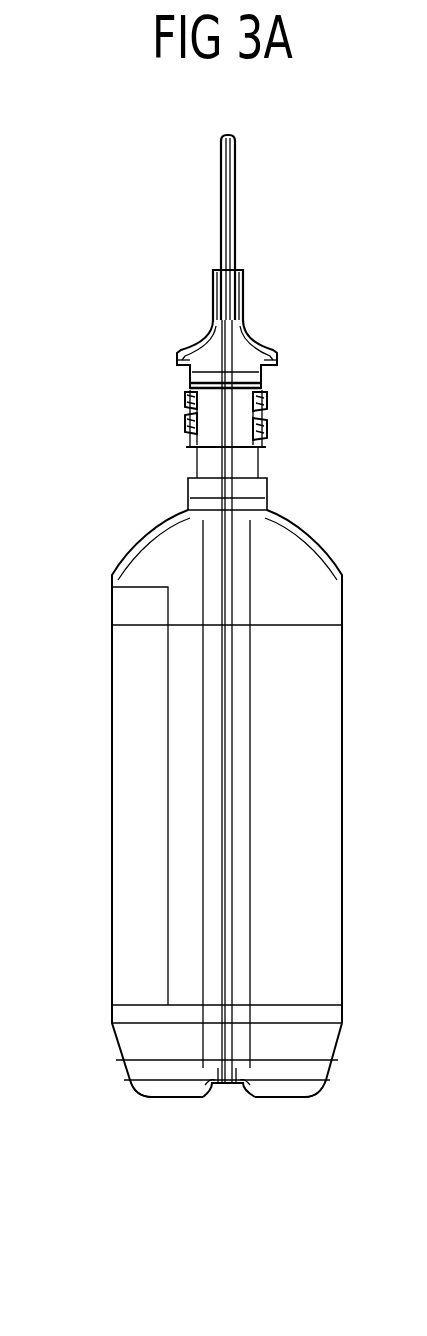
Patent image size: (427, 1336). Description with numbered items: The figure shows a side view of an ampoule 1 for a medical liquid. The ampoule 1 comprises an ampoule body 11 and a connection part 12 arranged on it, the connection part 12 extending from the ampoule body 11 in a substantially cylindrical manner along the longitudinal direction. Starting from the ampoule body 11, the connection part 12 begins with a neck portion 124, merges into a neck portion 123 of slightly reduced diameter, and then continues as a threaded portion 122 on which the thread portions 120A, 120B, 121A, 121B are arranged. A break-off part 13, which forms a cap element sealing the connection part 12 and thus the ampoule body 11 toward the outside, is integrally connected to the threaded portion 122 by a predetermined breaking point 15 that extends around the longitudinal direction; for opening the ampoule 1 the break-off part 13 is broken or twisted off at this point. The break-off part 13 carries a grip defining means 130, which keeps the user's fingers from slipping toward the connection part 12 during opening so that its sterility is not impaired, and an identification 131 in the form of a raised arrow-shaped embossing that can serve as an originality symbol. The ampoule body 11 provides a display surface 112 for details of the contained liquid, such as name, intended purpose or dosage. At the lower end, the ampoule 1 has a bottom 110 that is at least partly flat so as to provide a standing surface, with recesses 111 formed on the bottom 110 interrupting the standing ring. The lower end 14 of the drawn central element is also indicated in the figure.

The ampoule 1 is at (227, 852).
The ampoule body 11 is at (330, 805).
The connection part 12 is at (225, 448).
The break-off part 13 is at (226, 201).
The straw lower end 14 is at (217, 1094).
The predetermined breaking point 15 is at (259, 386).
The bottom 110 is at (280, 1094).
The recesses 111 is at (233, 1094).
The display surface 112 is at (140, 810).
The thread portion 120A is at (268, 400).
The thread portion 120B is at (185, 394).
The thread portion 121A is at (270, 433).
The thread portion 121B is at (185, 423).
The threaded portion 122 is at (203, 437).
The neck portion 123 is at (248, 463).
The neck portion 124 is at (187, 503).
The grip defining means 130 is at (205, 340).
The identification 131 is at (216, 291).